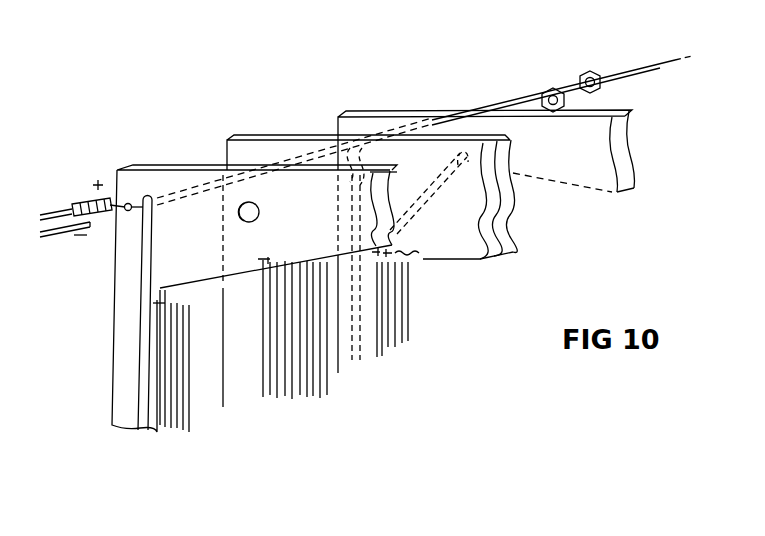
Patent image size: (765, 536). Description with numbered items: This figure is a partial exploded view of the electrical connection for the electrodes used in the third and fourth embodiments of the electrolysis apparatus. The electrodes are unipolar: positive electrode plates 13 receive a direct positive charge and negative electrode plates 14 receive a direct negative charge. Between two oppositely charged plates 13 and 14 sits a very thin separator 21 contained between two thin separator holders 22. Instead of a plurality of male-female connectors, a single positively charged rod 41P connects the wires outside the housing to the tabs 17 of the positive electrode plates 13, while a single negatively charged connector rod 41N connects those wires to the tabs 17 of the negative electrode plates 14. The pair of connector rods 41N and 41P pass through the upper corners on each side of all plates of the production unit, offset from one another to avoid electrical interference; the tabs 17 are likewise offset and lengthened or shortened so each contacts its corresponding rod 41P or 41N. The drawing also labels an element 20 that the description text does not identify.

The separator holder 22 is at (247, 153).
The end plate 20 is at (123, 397).
The tab 17 is at (144, 250).
The positive electrode plate 13 is at (177, 387).
The separator 21 is at (310, 373).
The negative electrode plate 14 is at (402, 293).
The positively charged rod 41P is at (74, 212).
The negatively charged connector rod 41N is at (62, 227).